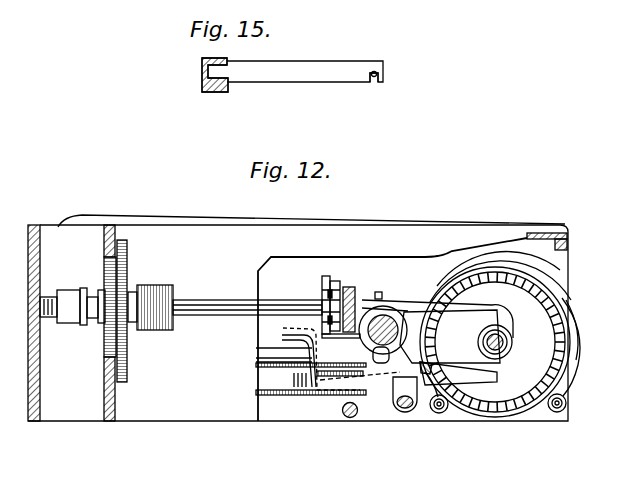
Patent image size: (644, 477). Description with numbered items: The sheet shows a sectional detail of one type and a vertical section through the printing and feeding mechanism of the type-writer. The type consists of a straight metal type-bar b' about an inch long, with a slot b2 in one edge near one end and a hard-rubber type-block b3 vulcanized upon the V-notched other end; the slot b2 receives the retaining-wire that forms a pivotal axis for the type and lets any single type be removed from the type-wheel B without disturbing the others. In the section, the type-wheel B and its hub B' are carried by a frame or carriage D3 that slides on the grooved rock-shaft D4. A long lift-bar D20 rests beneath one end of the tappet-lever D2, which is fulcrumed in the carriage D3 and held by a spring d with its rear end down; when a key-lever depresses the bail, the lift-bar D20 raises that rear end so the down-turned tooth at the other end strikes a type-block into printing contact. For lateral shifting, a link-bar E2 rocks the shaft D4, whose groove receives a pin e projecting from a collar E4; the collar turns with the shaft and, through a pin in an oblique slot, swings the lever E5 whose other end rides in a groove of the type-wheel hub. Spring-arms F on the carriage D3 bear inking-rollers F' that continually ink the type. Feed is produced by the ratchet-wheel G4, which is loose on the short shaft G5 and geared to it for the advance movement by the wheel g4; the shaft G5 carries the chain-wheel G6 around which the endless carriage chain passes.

In FIG. 15, the type-bar b' is at (305, 59).
In FIG. 15, the type-block b3 is at (204, 80).
In FIG. 15, the slot b2 is at (374, 83).
In FIG. 12, the ratchet-wheel G4 is at (127, 267).
In FIG. 12, the wheel g4 is at (110, 349).
In FIG. 12, the short shaft G5 is at (222, 298).
In FIG. 12, the chain-wheel G6 is at (324, 292).
In FIG. 12, the type-wheel B is at (495, 334).
In FIG. 12, the wheel hub B' is at (512, 342).
In FIG. 12, the lever E5 is at (476, 306).
In FIG. 12, the frame or carriage D3 is at (450, 336).
In FIG. 12, the rock-shaft D4 is at (405, 338).
In FIG. 12, the collar E4 is at (398, 326).
In FIG. 12, the pin e is at (386, 320).
In FIG. 12, the link-bar E2 is at (377, 291).
In FIG. 12, the lift-bar D20 is at (320, 359).
In FIG. 12, the tappet-lever D2 is at (408, 373).
In FIG. 12, the spring d is at (396, 372).
In FIG. 12, the spring-arms F is at (502, 374).
In FIG. 12, the inking-rollers F' is at (515, 422).